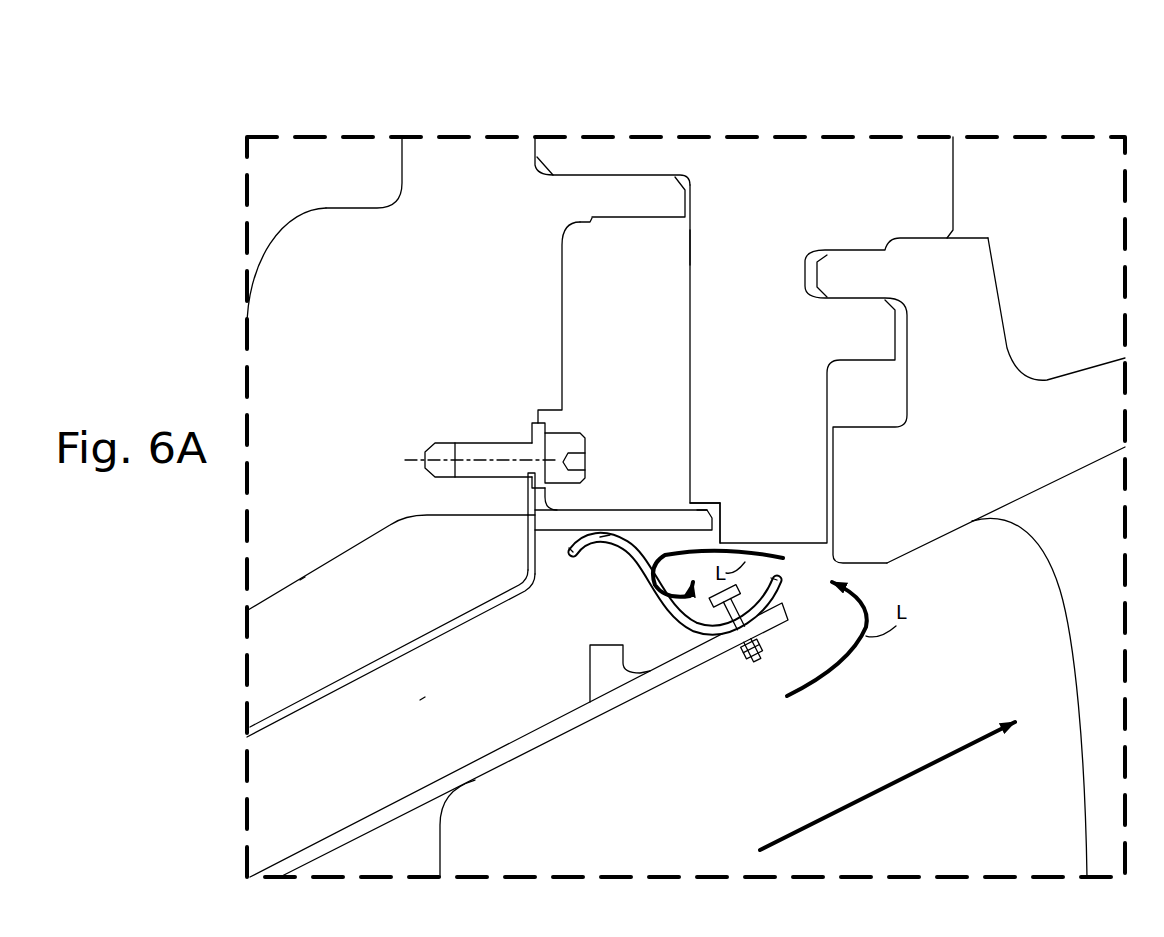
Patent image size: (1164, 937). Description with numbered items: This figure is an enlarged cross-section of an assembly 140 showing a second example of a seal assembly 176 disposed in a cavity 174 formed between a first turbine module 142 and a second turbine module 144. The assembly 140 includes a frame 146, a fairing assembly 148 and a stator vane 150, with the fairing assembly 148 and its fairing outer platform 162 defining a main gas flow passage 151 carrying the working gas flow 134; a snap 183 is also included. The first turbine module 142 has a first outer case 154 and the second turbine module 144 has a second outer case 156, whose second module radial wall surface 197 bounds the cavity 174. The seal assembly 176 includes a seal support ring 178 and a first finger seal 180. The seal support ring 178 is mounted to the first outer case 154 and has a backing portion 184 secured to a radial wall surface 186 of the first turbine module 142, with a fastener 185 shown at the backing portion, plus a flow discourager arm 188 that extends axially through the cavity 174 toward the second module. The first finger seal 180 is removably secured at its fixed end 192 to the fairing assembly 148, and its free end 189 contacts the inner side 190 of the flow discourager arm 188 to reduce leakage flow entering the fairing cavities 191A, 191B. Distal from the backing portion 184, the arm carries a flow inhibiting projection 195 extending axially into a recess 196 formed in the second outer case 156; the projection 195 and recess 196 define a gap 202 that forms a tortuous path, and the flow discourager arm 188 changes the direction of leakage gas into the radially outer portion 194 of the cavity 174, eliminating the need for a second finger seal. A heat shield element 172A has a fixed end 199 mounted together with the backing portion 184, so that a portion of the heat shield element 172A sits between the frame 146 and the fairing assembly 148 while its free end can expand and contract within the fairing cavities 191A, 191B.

The working gas flow 134 is at (875, 800).
The assembly 140 is at (428, 85).
The first turbine module 142 is at (385, 115).
The second turbine module 144 is at (827, 133).
The frame 146 is at (290, 272).
The fairing assembly 148 is at (446, 758).
The stator vane 150 is at (1028, 350).
The main gas flow passage 151 is at (763, 697).
The first outer case 154 is at (443, 415).
The second outer case 156 is at (873, 378).
The fairing outer platform 162 is at (552, 728).
The heat shield element 172A is at (327, 700).
The cavity 174 is at (668, 352).
The seal assembly 176 is at (606, 454).
The seal support ring 178 is at (526, 498).
The first finger seal 180 is at (648, 607).
The snap 183 is at (617, 190).
The backing portion 184 is at (543, 423).
The bolt 185 is at (472, 455).
The radial wall surface 186 is at (566, 299).
The flow discourager arm 188 is at (663, 520).
The finger seal free end 189 is at (613, 560).
The flow discourager inner side 190 is at (532, 553).
The fairing cavity 191A is at (363, 589).
The fairing cavity 191B is at (452, 690).
The first finger seal fixed end 192 is at (708, 635).
The annular cavity radially outer portion 194 is at (615, 250).
The flow inhibiting projection 195 is at (695, 520).
The recess 196 is at (708, 500).
The second module radial wall surface 197 is at (688, 247).
The heat shield fixed end 199 is at (533, 522).
The gap 202 is at (723, 512).